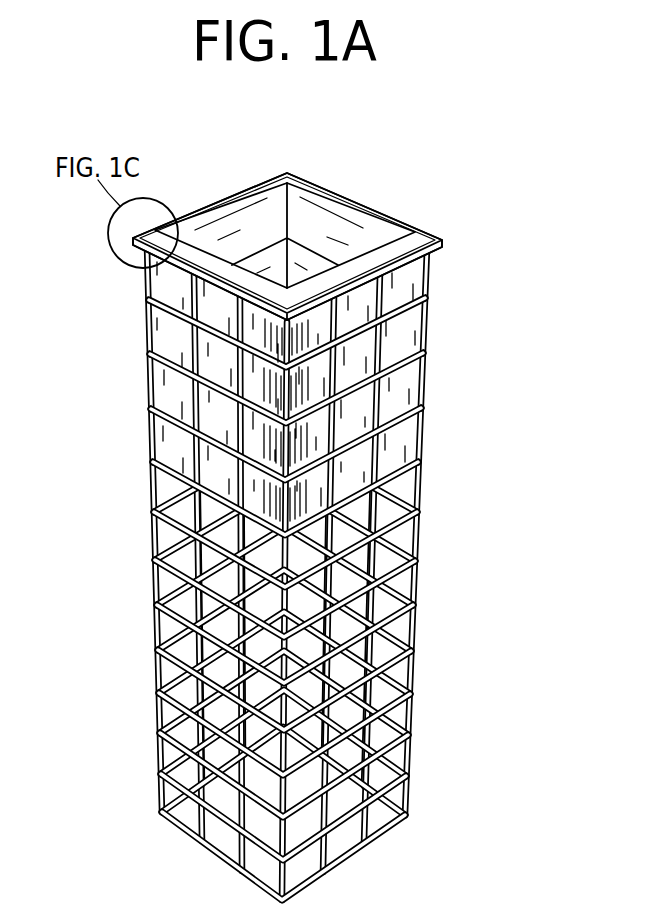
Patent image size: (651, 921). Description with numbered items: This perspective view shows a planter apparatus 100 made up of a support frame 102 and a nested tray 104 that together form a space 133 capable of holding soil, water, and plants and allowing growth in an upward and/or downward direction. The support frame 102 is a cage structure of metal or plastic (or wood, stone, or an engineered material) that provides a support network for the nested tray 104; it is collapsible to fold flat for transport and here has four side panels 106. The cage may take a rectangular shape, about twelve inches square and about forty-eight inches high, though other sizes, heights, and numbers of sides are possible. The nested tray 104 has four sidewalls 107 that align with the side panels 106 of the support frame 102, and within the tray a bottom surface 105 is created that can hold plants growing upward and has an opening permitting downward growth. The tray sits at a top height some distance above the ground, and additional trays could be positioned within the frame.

The apparatus 100 is at (302, 528).
The support frame 102 is at (408, 633).
The nested tray 104 is at (319, 238).
The bottom surface 105 is at (279, 549).
The side panels 106 is at (182, 775).
The sidewalls 107 is at (200, 298).
The space 133 is at (265, 230).